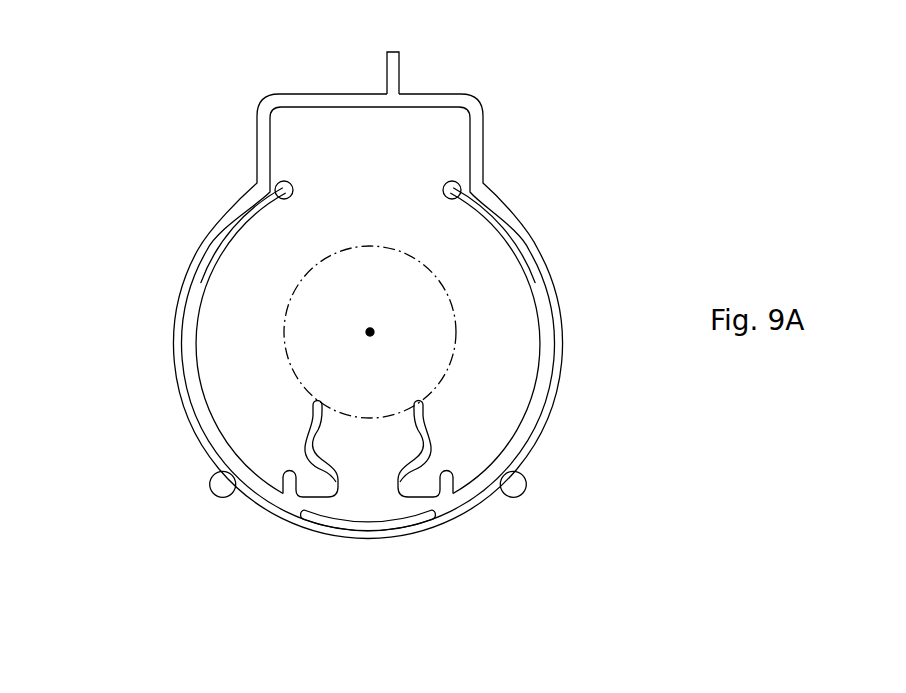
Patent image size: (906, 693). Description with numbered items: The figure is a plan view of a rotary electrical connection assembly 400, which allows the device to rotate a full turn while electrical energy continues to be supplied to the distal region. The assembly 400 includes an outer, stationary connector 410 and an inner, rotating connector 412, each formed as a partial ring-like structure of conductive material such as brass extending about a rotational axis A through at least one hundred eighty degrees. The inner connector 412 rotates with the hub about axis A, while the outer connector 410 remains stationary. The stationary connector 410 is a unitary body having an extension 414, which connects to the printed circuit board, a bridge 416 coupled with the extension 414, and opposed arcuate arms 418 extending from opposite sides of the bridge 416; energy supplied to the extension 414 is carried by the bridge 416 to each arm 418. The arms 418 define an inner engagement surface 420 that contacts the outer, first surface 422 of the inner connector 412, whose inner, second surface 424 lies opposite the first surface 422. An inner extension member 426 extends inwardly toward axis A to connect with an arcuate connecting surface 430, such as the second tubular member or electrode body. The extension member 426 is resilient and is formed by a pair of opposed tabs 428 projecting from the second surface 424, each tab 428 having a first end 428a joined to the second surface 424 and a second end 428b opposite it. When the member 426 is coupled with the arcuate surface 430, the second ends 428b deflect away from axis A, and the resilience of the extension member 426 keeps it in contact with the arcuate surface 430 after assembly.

The rotary electrical connection assembly 400 is at (102, 128).
The outer stationary connector 410 is at (516, 136).
The inner rotating connector 412 is at (297, 553).
The extension 414 is at (411, 58).
The bridge 416 is at (263, 101).
The arcuate arms 418 is at (531, 216).
The inner engagement surface 420 is at (228, 223).
The first surface 422 is at (257, 500).
The second surface 424 is at (196, 360).
The inner extension member 426 is at (285, 429).
The tabs 428 is at (396, 485).
The first end 428a is at (431, 502).
The second end 428b is at (445, 400).
The arcuate connecting surface 430 is at (471, 342).
The rotational axis A is at (373, 333).